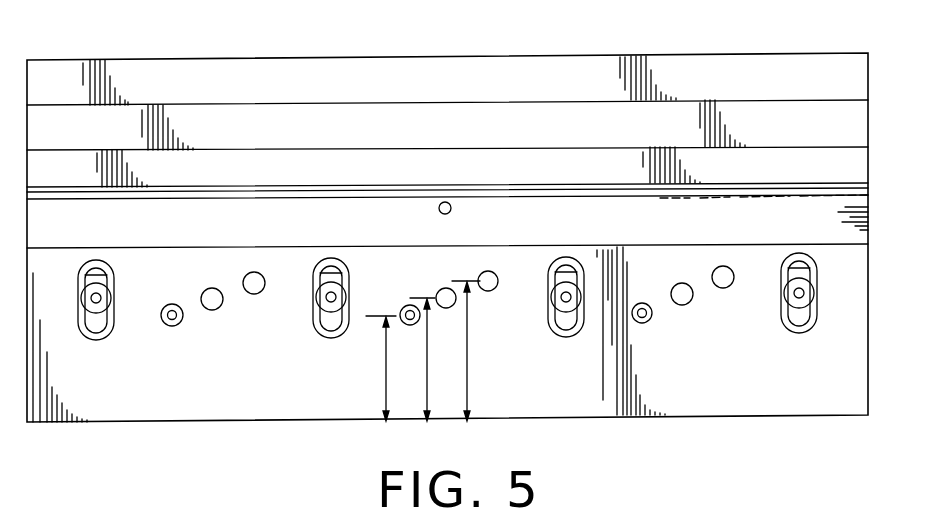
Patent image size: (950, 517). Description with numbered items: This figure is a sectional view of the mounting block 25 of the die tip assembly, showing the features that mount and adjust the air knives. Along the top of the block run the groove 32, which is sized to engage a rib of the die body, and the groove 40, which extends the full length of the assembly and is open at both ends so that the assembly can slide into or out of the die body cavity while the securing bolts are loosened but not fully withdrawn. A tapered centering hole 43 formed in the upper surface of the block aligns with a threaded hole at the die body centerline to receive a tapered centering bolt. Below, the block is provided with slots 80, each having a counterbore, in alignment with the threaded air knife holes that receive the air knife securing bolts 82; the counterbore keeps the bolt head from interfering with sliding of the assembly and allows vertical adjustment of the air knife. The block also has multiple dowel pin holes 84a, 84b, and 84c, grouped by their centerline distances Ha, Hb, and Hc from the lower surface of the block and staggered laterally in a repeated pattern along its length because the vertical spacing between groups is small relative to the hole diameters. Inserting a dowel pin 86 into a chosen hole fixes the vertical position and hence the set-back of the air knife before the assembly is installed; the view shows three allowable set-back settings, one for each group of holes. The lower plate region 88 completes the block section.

The mounting block 25 is at (447, 259).
The groove 32 is at (280, 133).
The groove 40 is at (552, 208).
The tapered centering hole 43 is at (445, 202).
The slot 80 is at (315, 275).
The air knife securing bolt 82 is at (90, 298).
The dowel pin hole 84a is at (170, 326).
The dowel pin hole 84b is at (213, 310).
The dowel pin hole 84c is at (257, 294).
The dowel pin 86 is at (163, 318).
The lower plate 88 is at (110, 395).